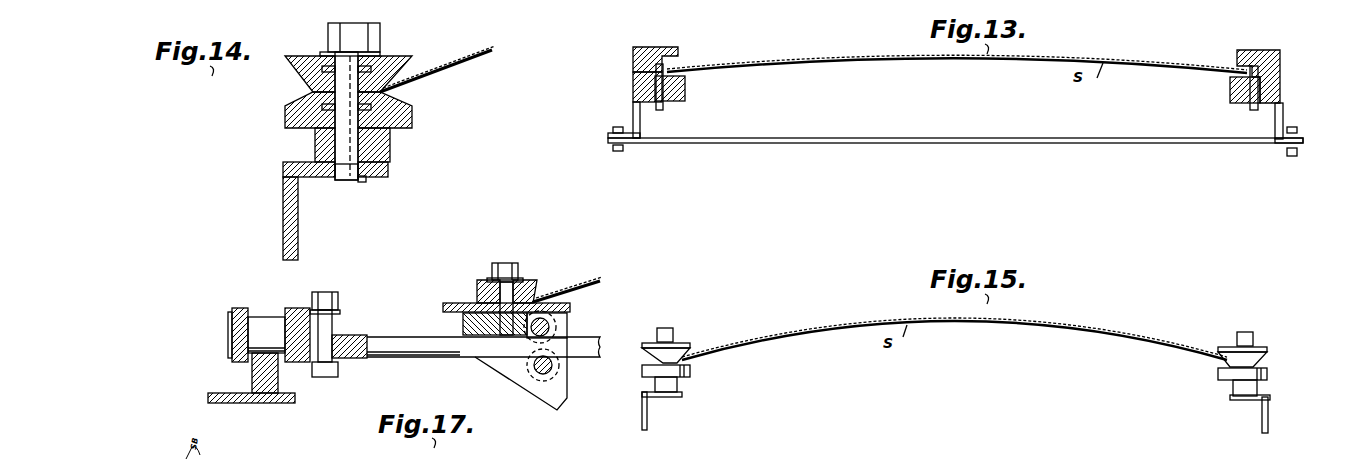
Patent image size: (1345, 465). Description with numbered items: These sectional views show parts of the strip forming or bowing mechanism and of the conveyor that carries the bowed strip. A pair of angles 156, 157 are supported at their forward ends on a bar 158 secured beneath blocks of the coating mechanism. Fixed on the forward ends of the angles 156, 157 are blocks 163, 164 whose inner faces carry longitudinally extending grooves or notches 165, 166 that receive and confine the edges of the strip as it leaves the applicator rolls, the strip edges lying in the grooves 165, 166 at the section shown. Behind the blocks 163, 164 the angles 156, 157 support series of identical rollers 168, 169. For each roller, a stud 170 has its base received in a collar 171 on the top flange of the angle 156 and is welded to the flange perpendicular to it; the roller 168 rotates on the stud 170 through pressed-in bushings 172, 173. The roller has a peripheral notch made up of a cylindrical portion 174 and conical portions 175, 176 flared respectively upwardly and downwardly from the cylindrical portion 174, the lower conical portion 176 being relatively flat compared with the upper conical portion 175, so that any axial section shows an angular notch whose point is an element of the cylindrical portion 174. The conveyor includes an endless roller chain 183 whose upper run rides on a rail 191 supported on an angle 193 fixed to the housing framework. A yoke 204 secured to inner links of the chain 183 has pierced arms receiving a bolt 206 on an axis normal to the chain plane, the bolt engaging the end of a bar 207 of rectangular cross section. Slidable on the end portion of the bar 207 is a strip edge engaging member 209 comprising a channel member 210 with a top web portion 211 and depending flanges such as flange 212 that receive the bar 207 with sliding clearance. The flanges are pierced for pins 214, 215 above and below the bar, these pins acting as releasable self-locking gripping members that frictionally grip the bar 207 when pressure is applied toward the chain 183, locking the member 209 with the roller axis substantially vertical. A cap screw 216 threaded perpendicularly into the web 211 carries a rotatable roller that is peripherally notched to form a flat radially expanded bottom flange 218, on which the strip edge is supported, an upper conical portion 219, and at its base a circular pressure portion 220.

In FIG. 14, the angle 156 is at (297, 218).
In FIG. 13, the angle 156 is at (1272, 131).
In FIG. 15, the angle 156 is at (1268, 403).
In FIG. 13, the angle 157 is at (640, 132).
In FIG. 15, the angle 157 is at (648, 425).
In FIG. 13, the bar 158 is at (957, 137).
In FIG. 13, the block 163 is at (1278, 82).
In FIG. 13, the block 164 is at (635, 86).
In FIG. 13, the groove 165 is at (1257, 70).
In FIG. 13, the groove 166 is at (670, 67).
In FIG. 14, the roller 168 is at (383, 64).
In FIG. 15, the roller 168 is at (1258, 352).
In FIG. 15, the roller 169 is at (682, 350).
In FIG. 14, the stud 170 is at (363, 152).
In FIG. 14, the collar 171 is at (327, 152).
In FIG. 14, the bushing 172 is at (367, 53).
In FIG. 14, the bushing 173 is at (372, 134).
In FIG. 14, the cylindrical portion 174 is at (300, 92).
In FIG. 14, the conical portion 175 is at (308, 84).
In FIG. 14, the conical portion 176 is at (294, 103).
In FIG. 17, the roller chain 183 is at (247, 311).
In FIG. 17, the rail 191 is at (277, 384).
In FIG. 17, the angle 193 is at (242, 392).
In FIG. 17, the yoke 204 is at (300, 308).
In FIG. 17, the bolt 206 is at (323, 300).
In FIG. 17, the bar 207 is at (381, 337).
In FIG. 17, the strip edge engaging member 209 is at (483, 304).
In FIG. 17, the channel member 210 is at (567, 326).
In FIG. 17, the top web portion 211 is at (463, 326).
In FIG. 17, the flange 212 is at (520, 374).
In FIG. 17, the pin 214 is at (553, 325).
In FIG. 17, the pin 215 is at (554, 366).
In FIG. 17, the cap screw 216 is at (510, 267).
In FIG. 17, the bottom flange 218 is at (460, 303).
In FIG. 17, the conical portion 219 is at (536, 299).
In FIG. 17, the circular pressure portion 220 is at (481, 300).